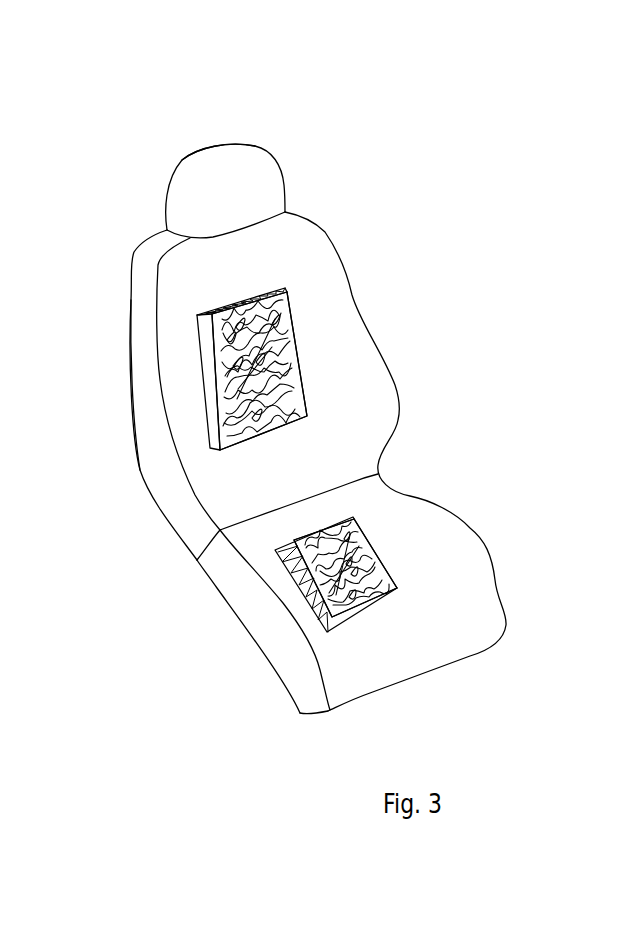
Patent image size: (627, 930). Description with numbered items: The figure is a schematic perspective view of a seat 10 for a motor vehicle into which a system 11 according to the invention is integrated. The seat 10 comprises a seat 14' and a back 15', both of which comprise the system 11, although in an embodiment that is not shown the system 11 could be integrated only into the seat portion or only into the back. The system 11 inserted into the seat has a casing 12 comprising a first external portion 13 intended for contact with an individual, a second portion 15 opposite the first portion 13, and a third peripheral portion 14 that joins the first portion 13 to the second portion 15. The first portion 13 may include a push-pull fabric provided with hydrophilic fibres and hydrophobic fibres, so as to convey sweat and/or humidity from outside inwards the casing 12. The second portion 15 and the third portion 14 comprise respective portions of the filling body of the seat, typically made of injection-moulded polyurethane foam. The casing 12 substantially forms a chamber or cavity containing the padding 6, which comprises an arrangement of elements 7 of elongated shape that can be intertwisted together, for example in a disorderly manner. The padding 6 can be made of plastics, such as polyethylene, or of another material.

The seat 10 is at (333, 88).
The system 11 is at (200, 295).
The casing 12 is at (365, 244).
The first external portion 13 is at (255, 263).
The third peripheral portion 14 is at (132, 430).
The seat 14' is at (412, 592).
The second portion 15 is at (162, 178).
The back 15' is at (204, 106).
The padding 6 is at (287, 337).
The elements of elongated shape 7 is at (287, 382).